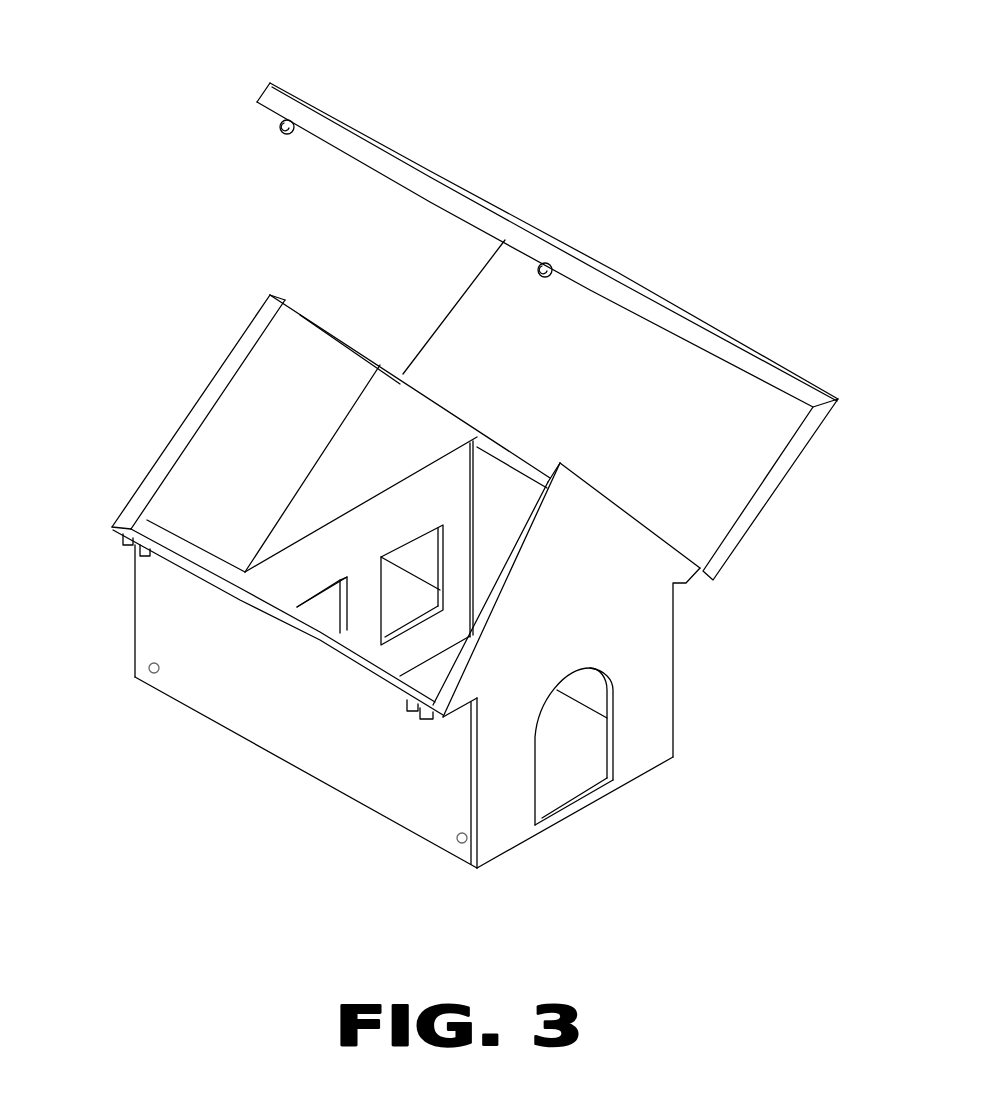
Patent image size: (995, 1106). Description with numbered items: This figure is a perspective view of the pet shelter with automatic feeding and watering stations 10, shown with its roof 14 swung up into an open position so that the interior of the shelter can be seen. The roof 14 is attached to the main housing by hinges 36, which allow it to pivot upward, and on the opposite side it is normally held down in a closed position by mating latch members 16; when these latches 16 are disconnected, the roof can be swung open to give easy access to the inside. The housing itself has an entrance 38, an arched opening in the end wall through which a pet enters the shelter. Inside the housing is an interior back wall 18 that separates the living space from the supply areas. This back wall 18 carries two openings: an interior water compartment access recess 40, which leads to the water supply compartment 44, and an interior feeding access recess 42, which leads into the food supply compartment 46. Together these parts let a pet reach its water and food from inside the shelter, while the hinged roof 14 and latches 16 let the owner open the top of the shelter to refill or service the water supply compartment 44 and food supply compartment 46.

The pet shelter with automatic feeding and watering stations 10 is at (692, 108).
The roof 14 is at (547, 331).
The mating latch members 16 is at (383, 840).
The interior back wall 18 is at (310, 572).
The hinges 36 is at (592, 665).
The entrance 38 is at (612, 759).
The interior water compartment access recess 40 is at (389, 503).
The interior feeding access recess 42 is at (462, 526).
The water supply compartment 44 is at (354, 320).
The food supply compartment 46 is at (321, 505).